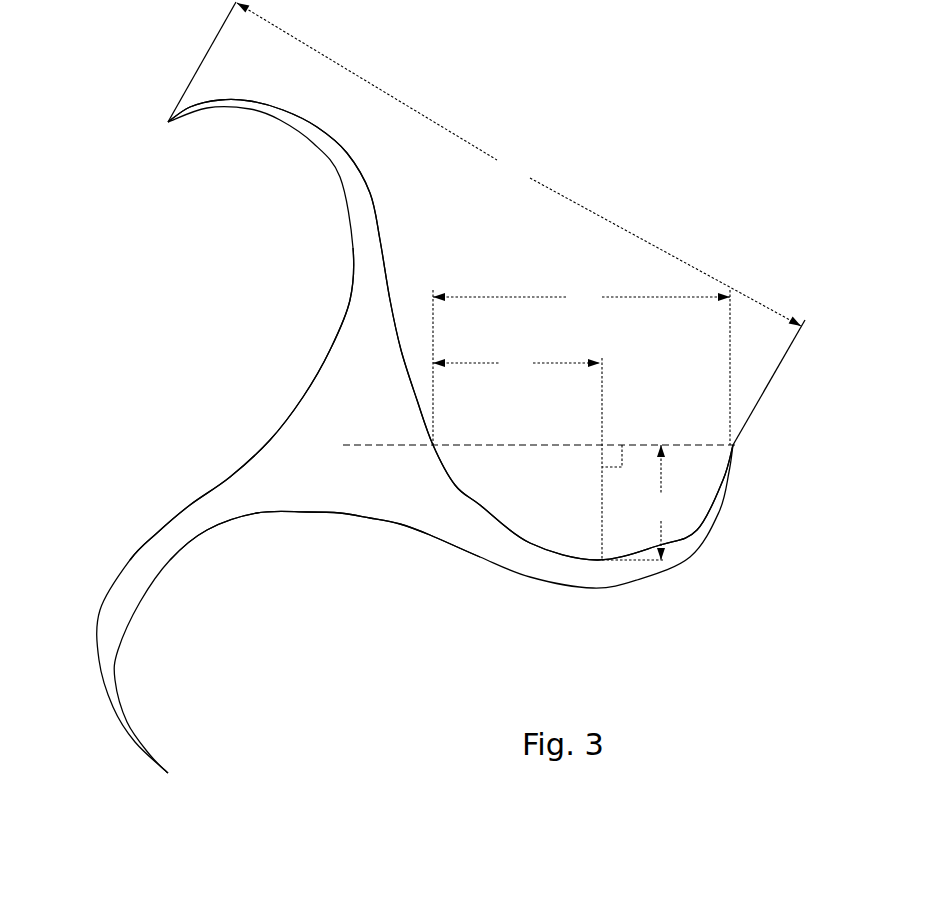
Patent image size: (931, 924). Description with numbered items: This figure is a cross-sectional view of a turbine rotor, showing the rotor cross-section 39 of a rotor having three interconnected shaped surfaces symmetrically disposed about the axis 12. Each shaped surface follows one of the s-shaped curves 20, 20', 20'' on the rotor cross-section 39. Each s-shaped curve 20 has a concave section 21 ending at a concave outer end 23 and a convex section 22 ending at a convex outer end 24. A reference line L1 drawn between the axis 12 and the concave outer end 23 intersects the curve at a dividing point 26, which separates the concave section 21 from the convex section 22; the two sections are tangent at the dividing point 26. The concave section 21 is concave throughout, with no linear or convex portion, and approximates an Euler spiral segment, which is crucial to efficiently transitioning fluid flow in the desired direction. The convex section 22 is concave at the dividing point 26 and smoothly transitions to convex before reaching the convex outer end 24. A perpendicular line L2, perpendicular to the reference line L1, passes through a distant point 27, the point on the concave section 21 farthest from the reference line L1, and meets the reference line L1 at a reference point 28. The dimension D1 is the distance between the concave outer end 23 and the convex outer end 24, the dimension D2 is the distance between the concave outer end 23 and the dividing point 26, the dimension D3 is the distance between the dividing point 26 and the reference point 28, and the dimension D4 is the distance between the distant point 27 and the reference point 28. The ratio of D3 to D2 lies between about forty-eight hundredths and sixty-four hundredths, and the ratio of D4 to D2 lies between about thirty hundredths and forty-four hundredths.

The axis 12 is at (357, 447).
The s-shaped curve 20 is at (426, 319).
The s-shaped curve 20' is at (325, 622).
The s-shaped curve 20'' is at (242, 404).
The concave section 21 is at (480, 505).
The convex section 22 is at (333, 131).
The concave outer end 23 is at (735, 450).
The convex outer end 24 is at (165, 118).
The dividing point 26 is at (437, 438).
The distant point 27 is at (600, 558).
The reference point 28 is at (604, 443).
The rotor cross-section 39 is at (200, 261).
The reference line L1 is at (420, 443).
The perpendicular line L2 is at (598, 488).
The dimension D1 is at (519, 164).
The dimension D2 is at (581, 297).
The dimension D3 is at (516, 363).
The dimension D4 is at (661, 502).